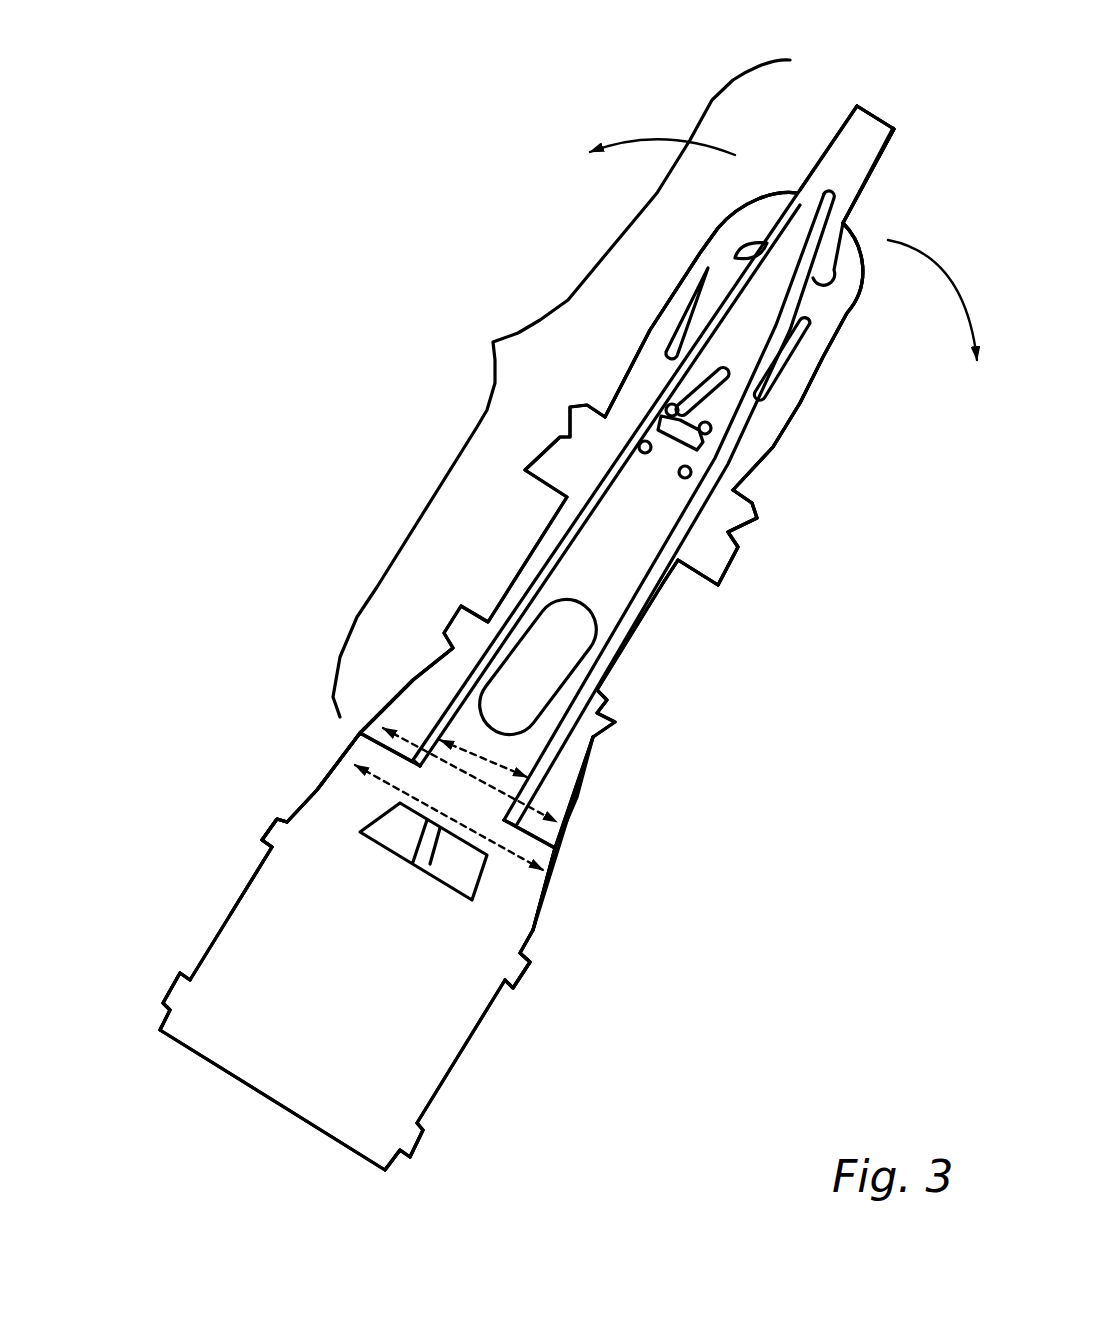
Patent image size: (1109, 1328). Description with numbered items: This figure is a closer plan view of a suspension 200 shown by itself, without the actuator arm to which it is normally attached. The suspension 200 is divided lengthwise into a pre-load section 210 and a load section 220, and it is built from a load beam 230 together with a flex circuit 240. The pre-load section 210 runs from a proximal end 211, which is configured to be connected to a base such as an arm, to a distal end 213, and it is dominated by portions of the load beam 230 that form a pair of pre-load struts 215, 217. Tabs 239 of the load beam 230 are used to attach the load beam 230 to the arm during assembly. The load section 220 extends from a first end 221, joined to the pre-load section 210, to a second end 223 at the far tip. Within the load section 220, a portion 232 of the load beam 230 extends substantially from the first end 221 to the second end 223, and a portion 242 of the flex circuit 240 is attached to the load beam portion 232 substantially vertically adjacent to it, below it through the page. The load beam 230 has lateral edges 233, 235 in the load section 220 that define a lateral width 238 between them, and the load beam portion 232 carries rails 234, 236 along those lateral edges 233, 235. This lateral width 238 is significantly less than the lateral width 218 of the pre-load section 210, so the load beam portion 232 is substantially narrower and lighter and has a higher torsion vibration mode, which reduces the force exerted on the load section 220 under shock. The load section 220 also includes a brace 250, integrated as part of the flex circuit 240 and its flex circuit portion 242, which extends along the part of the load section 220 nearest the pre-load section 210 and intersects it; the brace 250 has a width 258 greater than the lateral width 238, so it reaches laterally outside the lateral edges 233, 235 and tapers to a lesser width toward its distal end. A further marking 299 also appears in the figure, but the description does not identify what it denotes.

The suspension 200 is at (236, 205).
The pre-load section 210 is at (296, 742).
The proximal end 211 is at (287, 813).
The distal end 213 is at (557, 856).
The pre-load strut 215 is at (313, 787).
The pre-load strut 217 is at (537, 927).
The lateral width 218 is at (507, 853).
The load section 220 is at (493, 342).
The first end 221 is at (356, 737).
The second end 223 is at (880, 109).
The load beam 230 is at (684, 532).
The load beam portion 232 is at (658, 587).
The lateral edge 233 is at (637, 620).
The rail 234 is at (620, 633).
The lateral edge 235 is at (533, 573).
The rail 236 is at (560, 530).
The lateral width 238 is at (493, 760).
The tabs 239 is at (170, 993).
The flex circuit 240 is at (747, 528).
The flex circuit portion 242 is at (767, 460).
The brace 250 is at (411, 678).
The width 258 is at (412, 740).
The direction of rotation 299 is at (783, 236).